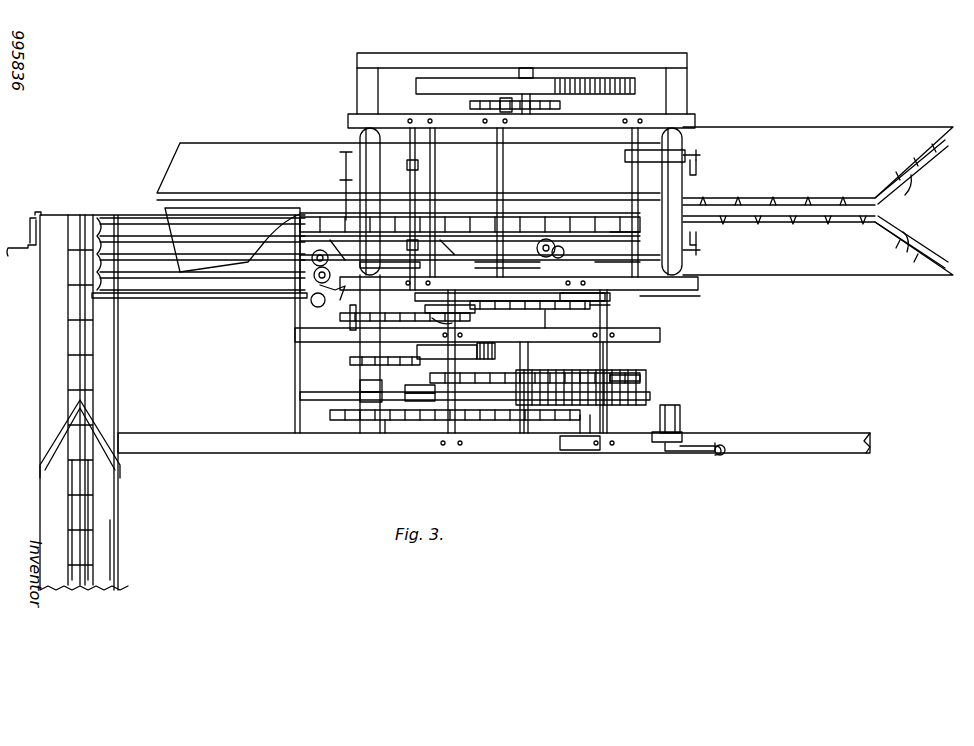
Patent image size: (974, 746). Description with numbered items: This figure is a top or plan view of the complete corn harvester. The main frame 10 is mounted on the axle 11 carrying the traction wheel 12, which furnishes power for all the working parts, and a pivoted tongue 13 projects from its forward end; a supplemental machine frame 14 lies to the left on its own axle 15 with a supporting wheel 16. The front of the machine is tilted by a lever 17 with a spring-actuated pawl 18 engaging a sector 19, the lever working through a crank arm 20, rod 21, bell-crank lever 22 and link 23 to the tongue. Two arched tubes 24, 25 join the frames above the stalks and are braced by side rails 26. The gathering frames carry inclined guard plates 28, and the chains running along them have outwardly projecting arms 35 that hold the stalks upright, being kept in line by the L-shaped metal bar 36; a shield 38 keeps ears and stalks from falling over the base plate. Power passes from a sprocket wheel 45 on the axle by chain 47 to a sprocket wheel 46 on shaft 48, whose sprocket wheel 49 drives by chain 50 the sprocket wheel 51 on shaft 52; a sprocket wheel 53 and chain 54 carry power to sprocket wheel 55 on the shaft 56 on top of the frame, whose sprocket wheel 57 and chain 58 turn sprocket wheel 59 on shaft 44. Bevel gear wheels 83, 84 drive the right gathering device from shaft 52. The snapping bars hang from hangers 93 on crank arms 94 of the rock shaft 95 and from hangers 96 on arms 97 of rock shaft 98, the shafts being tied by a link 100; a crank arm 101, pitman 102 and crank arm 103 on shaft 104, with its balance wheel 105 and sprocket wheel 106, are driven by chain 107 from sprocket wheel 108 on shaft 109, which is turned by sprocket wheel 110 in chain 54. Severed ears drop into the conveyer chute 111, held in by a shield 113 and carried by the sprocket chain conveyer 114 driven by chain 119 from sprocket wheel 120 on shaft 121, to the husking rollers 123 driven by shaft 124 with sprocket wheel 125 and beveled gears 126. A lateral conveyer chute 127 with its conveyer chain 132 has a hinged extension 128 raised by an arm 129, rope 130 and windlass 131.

The main frame 10 is at (568, 445).
The axle 11 is at (520, 425).
The traction wheel 12 is at (648, 394).
The pivoted tongue 13 is at (780, 450).
The supplemental machine frame 14 is at (461, 60).
The axle 15 is at (526, 67).
The supporting wheel 16 is at (551, 85).
The lever 17 is at (482, 352).
The spring-actuated pawl 18 is at (495, 355).
The sector 19 is at (352, 360).
The crank arm 20 is at (360, 398).
The rod 21 is at (360, 386).
The bell-crank lever 22 is at (706, 448).
The link 23 is at (716, 455).
The arched tube 24 is at (362, 133).
The arched tube 25 is at (680, 140).
The side rails 26 is at (680, 120).
The guard plate 28 is at (818, 201).
The outwardly projecting arms 35 is at (920, 238).
The L-shaped metal bar 36 is at (815, 205).
The shield 38 is at (408, 171).
The shaft 44 is at (543, 132).
The sprocket wheel 45 is at (585, 425).
The sprocket wheel 46 is at (332, 414).
The sprocket chain 47 is at (393, 425).
The shaft 48 is at (350, 328).
The sprocket wheel 49 is at (342, 317).
The chain 50 is at (530, 315).
The sprocket wheel 51 is at (556, 307).
The shaft 52 is at (545, 330).
The sprocket wheel 53 is at (550, 295).
The sprocket chain 54 is at (605, 298).
The sprocket wheel 55 is at (480, 290).
The shaft 56 is at (500, 183).
The sprocket wheel 57 is at (470, 105).
The chain 58 is at (525, 86).
The sprocket wheel 59 is at (560, 105).
The bevel gear wheel 83 is at (551, 240).
The bevel gear wheel 84 is at (565, 252).
The hangers 93 is at (346, 175).
The crank arms 94 is at (346, 158).
The rock shaft 95 is at (420, 184).
The hangers 96 is at (700, 172).
The arms 97 is at (704, 155).
The rock shaft 98 is at (632, 180).
The link 100 is at (596, 262).
The crank arm 101 is at (440, 297).
The pitman 102 is at (452, 313).
The crank arm 103 is at (440, 318).
The shaft 104 is at (450, 396).
The balance wheel 105 is at (410, 385).
The sprocket wheel 106 is at (435, 394).
The chain 107 is at (502, 377).
The sprocket wheel 108 is at (645, 379).
The shaft 109 is at (608, 360).
The sprocket wheel 110 is at (645, 296).
The conveyer chute 111 is at (452, 225).
The shield 113 is at (480, 246).
The sprocket chain conveyer 114 is at (618, 228).
The chain 119 is at (340, 250).
The sprocket wheel 120 is at (412, 235).
The shaft 121 is at (385, 300).
The husking rollers 123 is at (157, 260).
The shaft 124 is at (312, 268).
The sprocket wheel 125 is at (340, 255).
The beveled gears 126 is at (330, 285).
The conveyer chute 127 is at (110, 380).
The hinged extension 128 is at (112, 527).
The arm 129 is at (103, 432).
The rope 130 is at (75, 345).
The windlass 131 is at (22, 250).
The conveyer chain 132 is at (90, 497).